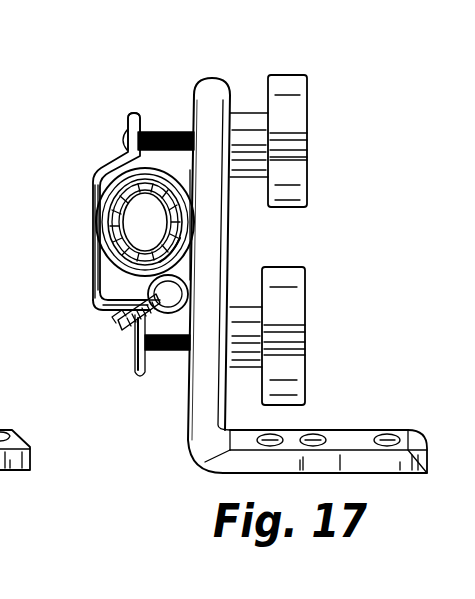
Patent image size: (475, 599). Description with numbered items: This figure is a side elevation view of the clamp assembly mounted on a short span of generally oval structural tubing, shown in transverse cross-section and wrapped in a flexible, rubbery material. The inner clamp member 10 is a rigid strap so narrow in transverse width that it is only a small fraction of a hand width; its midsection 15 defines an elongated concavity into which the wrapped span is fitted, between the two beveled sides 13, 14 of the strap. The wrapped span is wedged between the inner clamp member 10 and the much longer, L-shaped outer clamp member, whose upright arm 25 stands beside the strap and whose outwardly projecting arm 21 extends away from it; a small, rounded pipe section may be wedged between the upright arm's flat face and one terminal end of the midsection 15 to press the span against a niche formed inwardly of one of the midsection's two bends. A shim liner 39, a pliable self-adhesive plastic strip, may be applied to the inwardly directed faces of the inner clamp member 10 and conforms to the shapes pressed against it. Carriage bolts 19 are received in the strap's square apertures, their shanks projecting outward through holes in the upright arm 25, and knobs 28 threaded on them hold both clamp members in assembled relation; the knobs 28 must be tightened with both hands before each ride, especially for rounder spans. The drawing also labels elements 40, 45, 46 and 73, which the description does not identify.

The inner clamp member 10 is at (84, 217).
The beveled side 13 is at (88, 208).
The beveled side 14 is at (110, 312).
The midsection 15 is at (93, 260).
The carriage bolt 19 is at (177, 128).
The outwardly projecting arm 21 is at (337, 433).
The upright arm 25 is at (218, 88).
The knob 28 is at (310, 140).
The shim liner 39 is at (140, 118).
The bearing 40 is at (152, 213).
The eyelet 45 is at (188, 277).
The screw 46 is at (127, 327).
The rear flange 73 is at (193, 243).